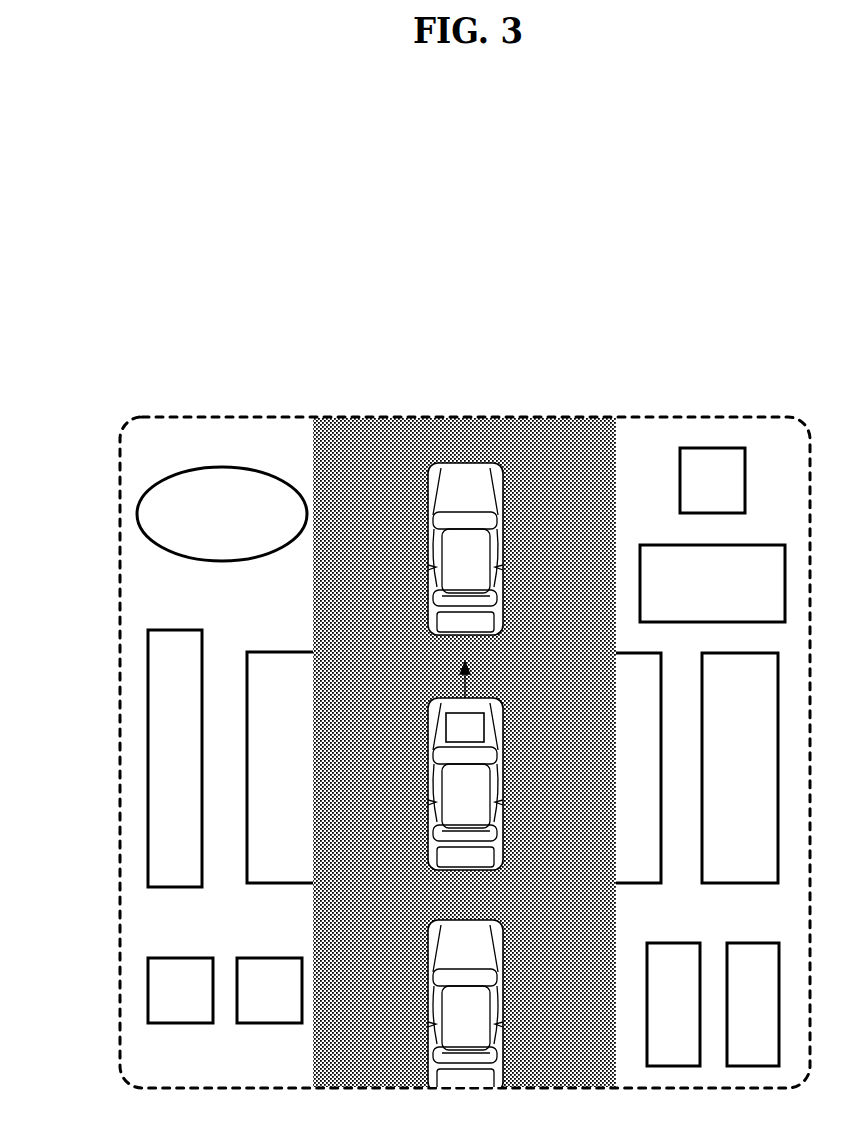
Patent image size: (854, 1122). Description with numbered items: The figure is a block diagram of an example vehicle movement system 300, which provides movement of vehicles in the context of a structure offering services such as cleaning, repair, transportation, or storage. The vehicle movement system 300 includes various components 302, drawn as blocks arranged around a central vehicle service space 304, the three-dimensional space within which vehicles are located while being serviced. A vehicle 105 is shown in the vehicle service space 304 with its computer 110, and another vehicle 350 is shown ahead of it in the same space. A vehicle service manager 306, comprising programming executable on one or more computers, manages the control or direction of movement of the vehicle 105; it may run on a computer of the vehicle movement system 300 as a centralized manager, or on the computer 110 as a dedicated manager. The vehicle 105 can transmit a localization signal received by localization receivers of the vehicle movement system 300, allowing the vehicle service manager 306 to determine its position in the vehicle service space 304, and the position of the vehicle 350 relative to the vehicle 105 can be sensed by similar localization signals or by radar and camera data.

The vehicle movement system 300 is at (121, 420).
The components 302 is at (157, 769).
The vehicle service space 304 is at (600, 447).
The vehicle service manager 306 is at (277, 533).
The vehicle 350 is at (417, 511).
The vehicle 105 is at (422, 704).
The computer 110 is at (450, 739).